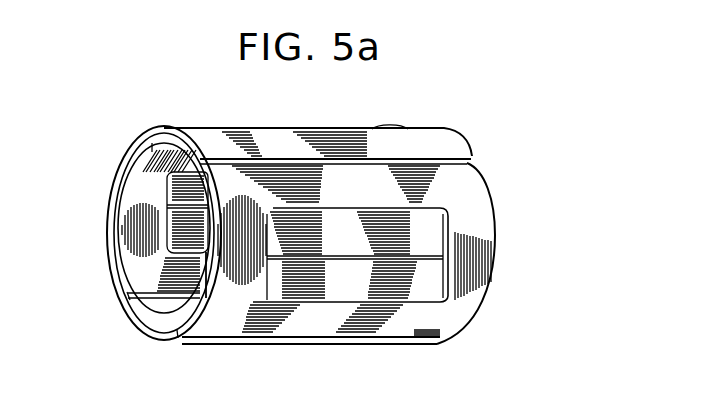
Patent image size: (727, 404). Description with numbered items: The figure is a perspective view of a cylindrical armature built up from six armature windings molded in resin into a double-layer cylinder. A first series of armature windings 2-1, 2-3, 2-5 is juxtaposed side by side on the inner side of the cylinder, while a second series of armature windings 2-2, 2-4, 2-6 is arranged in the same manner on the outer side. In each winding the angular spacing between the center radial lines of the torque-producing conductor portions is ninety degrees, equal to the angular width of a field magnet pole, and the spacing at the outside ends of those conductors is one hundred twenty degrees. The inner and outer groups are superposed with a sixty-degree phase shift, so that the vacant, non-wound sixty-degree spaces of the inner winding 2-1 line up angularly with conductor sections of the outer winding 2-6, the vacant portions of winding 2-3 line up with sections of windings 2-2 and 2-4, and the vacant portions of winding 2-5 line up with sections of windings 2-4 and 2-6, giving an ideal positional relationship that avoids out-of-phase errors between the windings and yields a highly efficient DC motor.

The armature winding 2-1 is at (210, 193).
The armature winding 2-2 is at (223, 317).
The armature winding 2-3 is at (166, 305).
The armature winding 2-4 is at (120, 296).
The armature winding 2-5 is at (128, 233).
The armature winding 2-6 is at (197, 131).